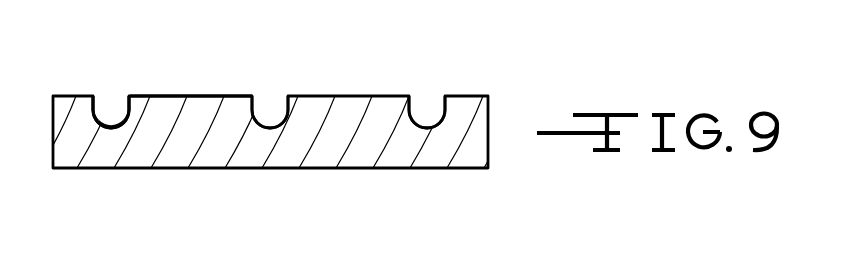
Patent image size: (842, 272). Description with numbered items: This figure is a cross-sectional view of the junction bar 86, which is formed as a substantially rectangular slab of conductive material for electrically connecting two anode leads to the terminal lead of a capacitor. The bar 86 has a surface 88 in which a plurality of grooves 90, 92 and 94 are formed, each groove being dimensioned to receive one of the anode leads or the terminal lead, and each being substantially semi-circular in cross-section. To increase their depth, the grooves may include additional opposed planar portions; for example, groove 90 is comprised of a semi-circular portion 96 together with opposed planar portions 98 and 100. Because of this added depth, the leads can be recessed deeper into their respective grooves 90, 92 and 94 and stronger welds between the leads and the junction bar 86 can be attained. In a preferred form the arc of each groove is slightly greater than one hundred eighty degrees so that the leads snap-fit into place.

The junction bar 86 is at (453, 67).
The surface 88 is at (218, 96).
The groove 90 is at (112, 127).
The groove 92 is at (428, 127).
The groove 94 is at (271, 128).
The semi-circular portion 96 is at (112, 125).
The opposed planar portion 98 is at (100, 108).
The opposed planar portion 100 is at (122, 122).